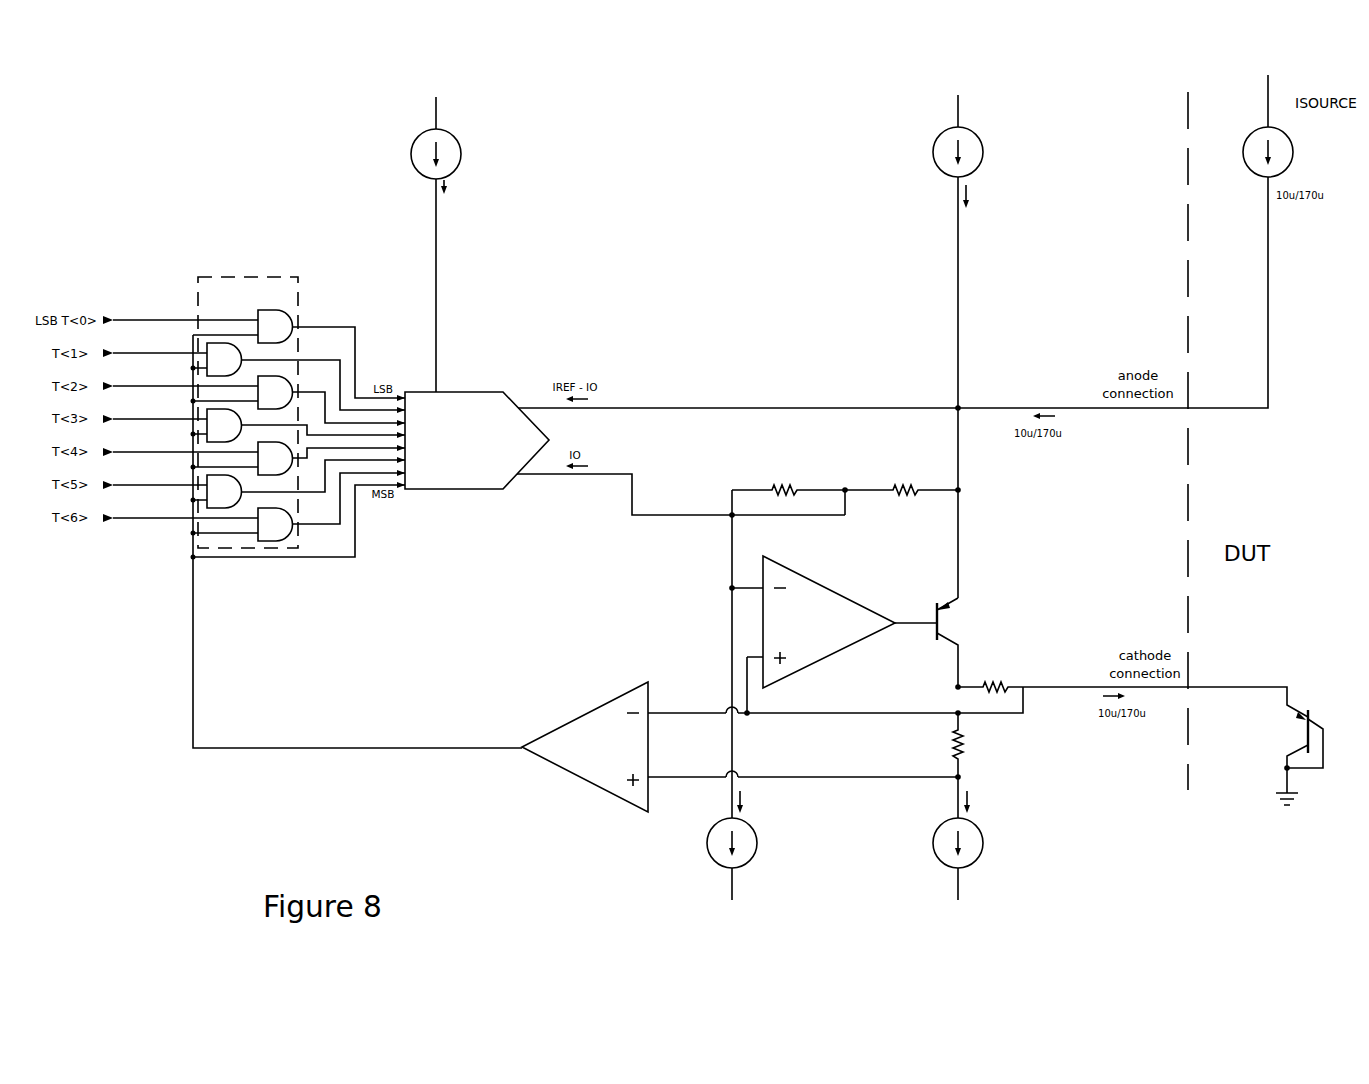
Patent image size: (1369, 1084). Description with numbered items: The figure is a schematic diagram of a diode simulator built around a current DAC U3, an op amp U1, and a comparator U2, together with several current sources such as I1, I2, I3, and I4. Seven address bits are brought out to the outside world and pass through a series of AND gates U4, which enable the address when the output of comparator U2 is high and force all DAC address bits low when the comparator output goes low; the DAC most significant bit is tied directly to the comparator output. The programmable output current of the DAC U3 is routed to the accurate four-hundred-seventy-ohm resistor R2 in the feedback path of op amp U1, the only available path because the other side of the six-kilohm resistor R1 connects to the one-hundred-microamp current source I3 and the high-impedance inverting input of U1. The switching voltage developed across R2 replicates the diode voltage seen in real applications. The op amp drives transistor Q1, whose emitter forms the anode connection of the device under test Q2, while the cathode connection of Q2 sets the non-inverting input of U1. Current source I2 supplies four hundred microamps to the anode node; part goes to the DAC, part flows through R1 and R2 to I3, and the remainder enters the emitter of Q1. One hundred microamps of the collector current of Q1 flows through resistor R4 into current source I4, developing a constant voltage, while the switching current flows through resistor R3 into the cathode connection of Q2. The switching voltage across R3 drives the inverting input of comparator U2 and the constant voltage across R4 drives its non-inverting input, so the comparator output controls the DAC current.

The op amp U1 is at (834, 634).
The comparator U2 is at (585, 747).
The current DAC U3 is at (477, 433).
The AND gates U4 is at (248, 412).
The transistor Q1 is at (961, 642).
The DUT Q2 is at (1292, 757).
The 6 kΩ resistor R1 is at (788, 482).
The 470 Ω resistor R2 is at (901, 482).
The 1.3 kΩ resistor R3 is at (990, 671).
The 1.3 kΩ resistor R4 is at (942, 745).
The current source I1 is at (446, 236).
The current source I2 is at (968, 338).
The current source I3 is at (742, 859).
The current source I4 is at (972, 851).